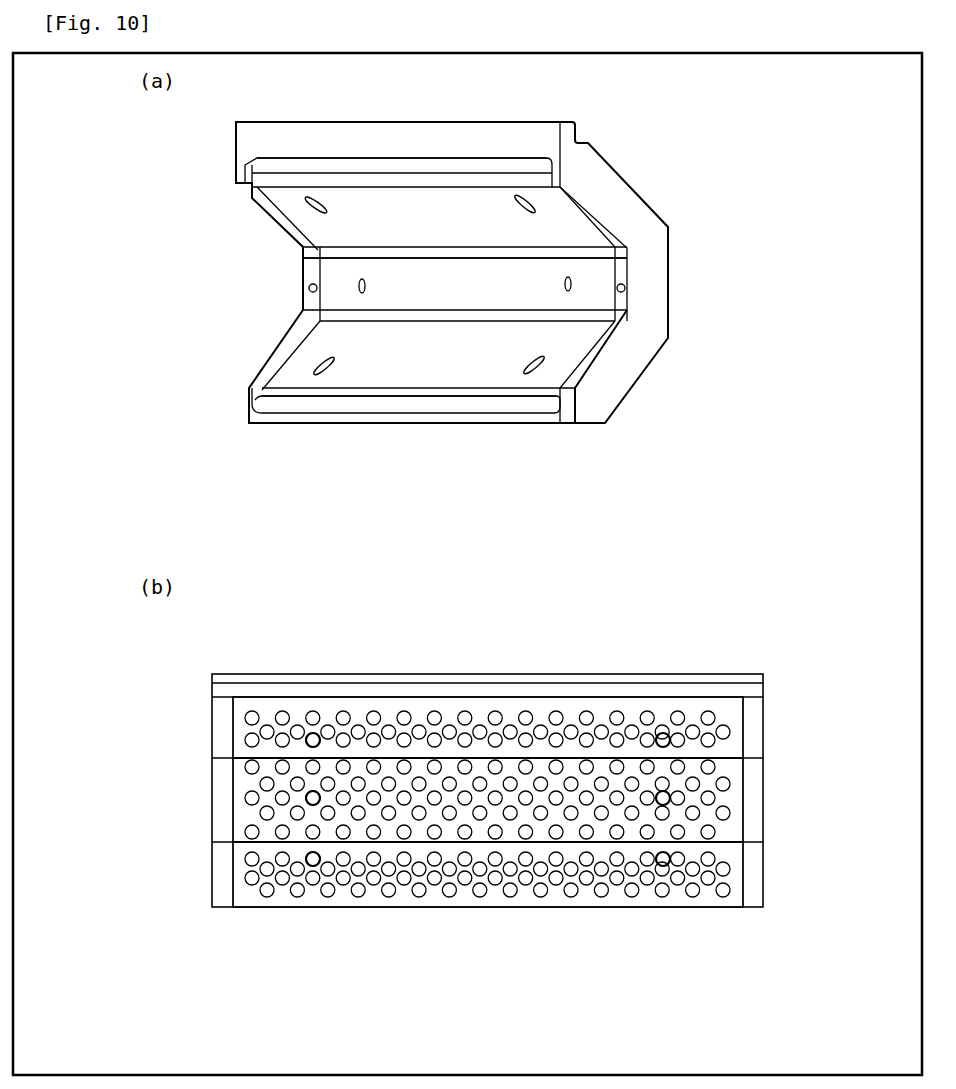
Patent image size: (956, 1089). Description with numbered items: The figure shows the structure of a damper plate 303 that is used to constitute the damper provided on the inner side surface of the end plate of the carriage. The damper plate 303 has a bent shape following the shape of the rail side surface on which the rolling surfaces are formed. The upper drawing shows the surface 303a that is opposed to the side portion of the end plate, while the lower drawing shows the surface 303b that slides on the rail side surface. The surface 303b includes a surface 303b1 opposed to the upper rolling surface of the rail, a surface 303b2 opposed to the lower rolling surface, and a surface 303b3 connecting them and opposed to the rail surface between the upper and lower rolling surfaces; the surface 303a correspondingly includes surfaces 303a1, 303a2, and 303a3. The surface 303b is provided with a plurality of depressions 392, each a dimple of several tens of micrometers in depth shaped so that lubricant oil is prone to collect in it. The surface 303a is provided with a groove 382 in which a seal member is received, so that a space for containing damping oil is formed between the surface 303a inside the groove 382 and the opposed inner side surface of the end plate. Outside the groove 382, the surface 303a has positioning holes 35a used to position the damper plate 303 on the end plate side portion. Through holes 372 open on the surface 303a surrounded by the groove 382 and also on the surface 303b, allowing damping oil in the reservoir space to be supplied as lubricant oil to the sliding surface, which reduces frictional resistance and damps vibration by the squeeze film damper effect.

The damper plate 303 is at (659, 434).
The surface 303a is at (158, 247).
The surface 303a1 is at (302, 218).
The surface 303a2 is at (298, 358).
The surface 303a3 is at (330, 275).
The surface 303b is at (120, 713).
The surface 303b1 is at (232, 720).
The surface 303b2 is at (232, 880).
The surface 303b3 is at (232, 798).
The positioning hole 35a is at (627, 290).
The through hole 372 is at (303, 201).
The groove 382 is at (374, 172).
The depression 392 is at (404, 712).